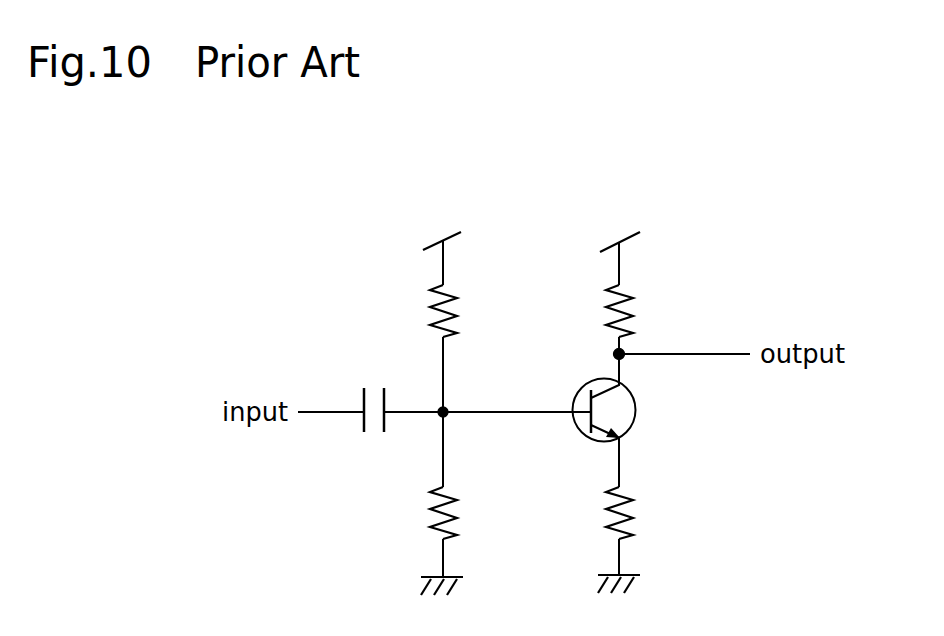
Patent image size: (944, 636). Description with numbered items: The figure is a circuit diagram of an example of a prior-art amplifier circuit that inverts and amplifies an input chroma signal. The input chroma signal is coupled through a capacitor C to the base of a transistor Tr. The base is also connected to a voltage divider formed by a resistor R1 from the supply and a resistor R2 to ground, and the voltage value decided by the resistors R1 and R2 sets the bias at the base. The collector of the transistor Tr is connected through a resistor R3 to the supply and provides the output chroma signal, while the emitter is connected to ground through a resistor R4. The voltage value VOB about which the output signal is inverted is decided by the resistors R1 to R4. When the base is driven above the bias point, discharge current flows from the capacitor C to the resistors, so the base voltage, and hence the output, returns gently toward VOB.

The capacitor C is at (373, 393).
The resistor R1 is at (464, 322).
The resistor R2 is at (463, 503).
The resistor R3 is at (641, 293).
The resistor R4 is at (640, 540).
The transistor Tr is at (618, 420).